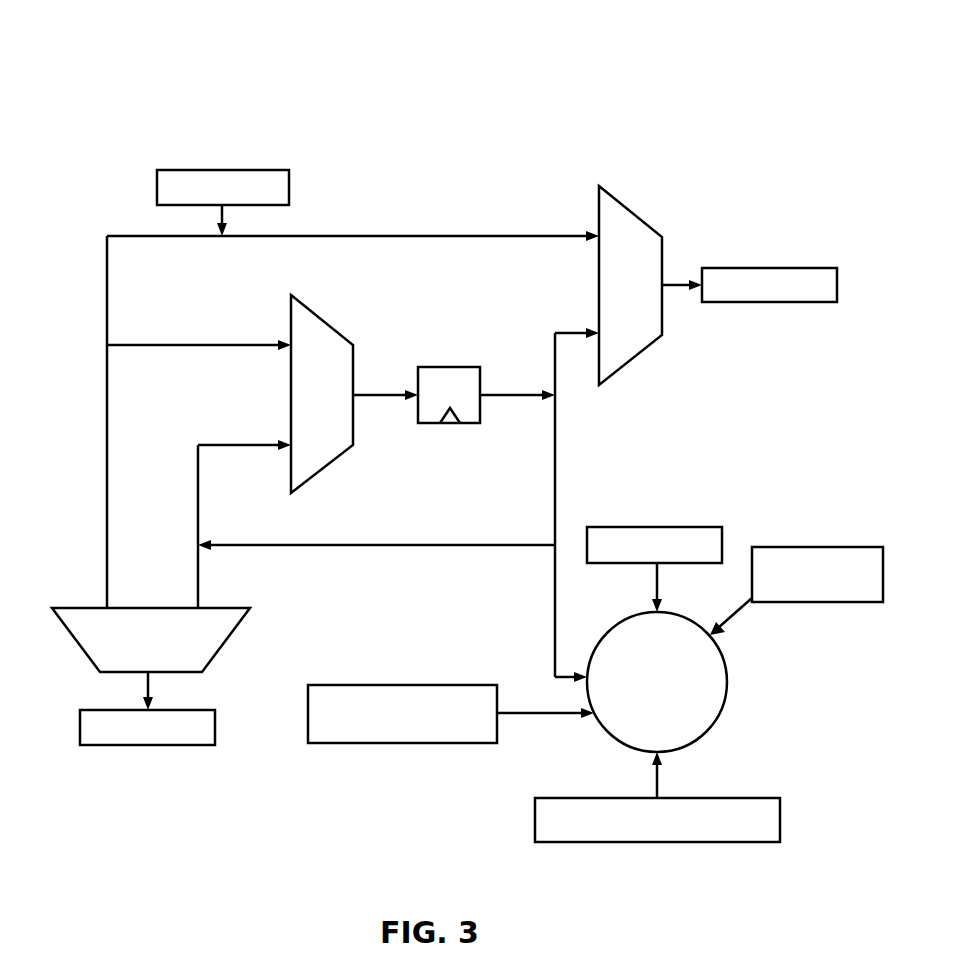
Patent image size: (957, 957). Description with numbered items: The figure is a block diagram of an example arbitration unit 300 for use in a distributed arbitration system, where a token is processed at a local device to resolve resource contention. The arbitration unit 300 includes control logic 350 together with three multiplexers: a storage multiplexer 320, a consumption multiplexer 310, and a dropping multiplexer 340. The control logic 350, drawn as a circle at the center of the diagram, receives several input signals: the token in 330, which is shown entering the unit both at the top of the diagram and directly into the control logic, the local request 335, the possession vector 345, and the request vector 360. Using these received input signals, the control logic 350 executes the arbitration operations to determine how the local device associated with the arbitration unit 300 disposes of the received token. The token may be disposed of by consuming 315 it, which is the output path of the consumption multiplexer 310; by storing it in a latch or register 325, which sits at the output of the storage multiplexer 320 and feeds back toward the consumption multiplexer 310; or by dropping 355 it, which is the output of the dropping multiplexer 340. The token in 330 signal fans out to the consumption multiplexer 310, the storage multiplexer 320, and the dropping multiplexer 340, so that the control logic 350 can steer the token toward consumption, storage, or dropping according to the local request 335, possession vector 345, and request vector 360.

The arbitration unit 300 is at (773, 54).
The consumption multiplexer 310 is at (645, 212).
The consuming 315 is at (775, 268).
The storage multiplexer 320 is at (312, 312).
The latch or register 325 is at (444, 367).
The token in 330 is at (290, 187).
The local request 335 is at (803, 547).
The dropping multiplexer 340 is at (228, 608).
The possession vector 345 is at (410, 685).
The control logic 350 is at (729, 684).
The dropping 355 is at (170, 745).
The request vector 360 is at (762, 798).